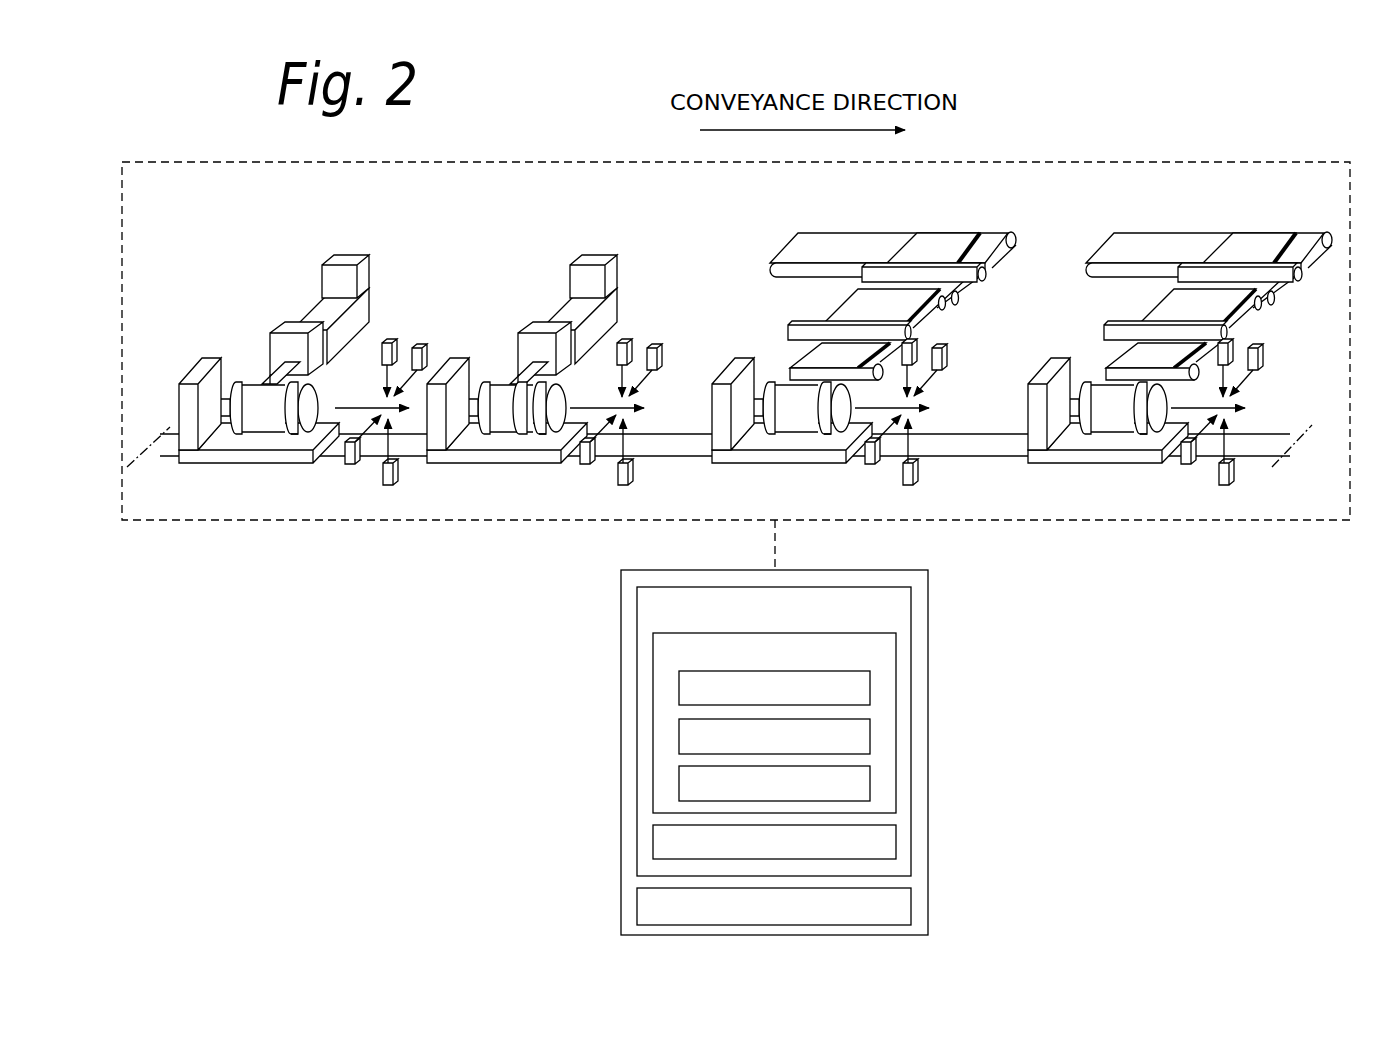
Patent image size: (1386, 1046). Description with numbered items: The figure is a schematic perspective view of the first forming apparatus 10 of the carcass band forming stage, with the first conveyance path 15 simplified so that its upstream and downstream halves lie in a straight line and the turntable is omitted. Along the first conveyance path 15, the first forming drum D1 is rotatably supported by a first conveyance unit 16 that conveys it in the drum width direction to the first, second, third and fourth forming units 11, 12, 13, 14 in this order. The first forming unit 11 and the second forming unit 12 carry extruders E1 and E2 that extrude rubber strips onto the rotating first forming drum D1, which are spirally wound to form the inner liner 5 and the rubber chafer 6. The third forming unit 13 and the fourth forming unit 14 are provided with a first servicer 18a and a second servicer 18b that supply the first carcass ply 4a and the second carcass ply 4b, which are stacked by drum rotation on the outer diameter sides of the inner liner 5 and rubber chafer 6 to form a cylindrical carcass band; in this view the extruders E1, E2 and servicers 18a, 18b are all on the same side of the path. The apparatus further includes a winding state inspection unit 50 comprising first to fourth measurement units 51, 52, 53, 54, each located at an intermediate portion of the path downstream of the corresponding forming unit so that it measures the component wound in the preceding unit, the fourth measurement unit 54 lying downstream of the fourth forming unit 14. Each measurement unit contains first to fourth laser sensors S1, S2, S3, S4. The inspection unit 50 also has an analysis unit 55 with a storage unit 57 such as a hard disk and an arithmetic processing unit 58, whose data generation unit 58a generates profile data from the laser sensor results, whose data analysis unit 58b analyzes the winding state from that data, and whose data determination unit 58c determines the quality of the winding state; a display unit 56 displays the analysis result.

The first forming apparatus 10 is at (248, 161).
The first forming unit 11 is at (270, 359).
The second forming unit 12 is at (522, 347).
The third forming unit 13 is at (845, 347).
The fourth forming unit 14 is at (1168, 349).
The first conveyance path 15 is at (160, 433).
The first conveyance unit 16 is at (205, 365).
The inner liner 5 is at (263, 428).
The rubber chafer 6 is at (528, 430).
The first carcass ply 4a is at (798, 428).
The second carcass ply 4b is at (1115, 428).
The first forming drum D1 is at (297, 428).
The extruder E1 is at (318, 312).
The extruder E2 is at (583, 266).
The first servicer 18a is at (950, 232).
The second servicer 18b is at (1263, 230).
The first laser sensor S1 is at (423, 345).
The second laser sensor S2 is at (388, 340).
The third laser sensor S3 is at (350, 465).
The fourth laser sensor S4 is at (395, 472).
The first measurement unit 51 is at (400, 373).
The second measurement unit 52 is at (656, 332).
The third measurement unit 53 is at (960, 391).
The fourth measurement unit 54 is at (1203, 478).
The winding state inspection unit 50 is at (784, 752).
The analysis unit 55 is at (836, 731).
The display unit 56 is at (911, 910).
The storage unit 57 is at (896, 846).
The arithmetic processing unit 58 is at (844, 723).
The data generation unit 58a is at (870, 698).
The data analysis unit 58b is at (870, 740).
The data determination unit 58c is at (870, 786).